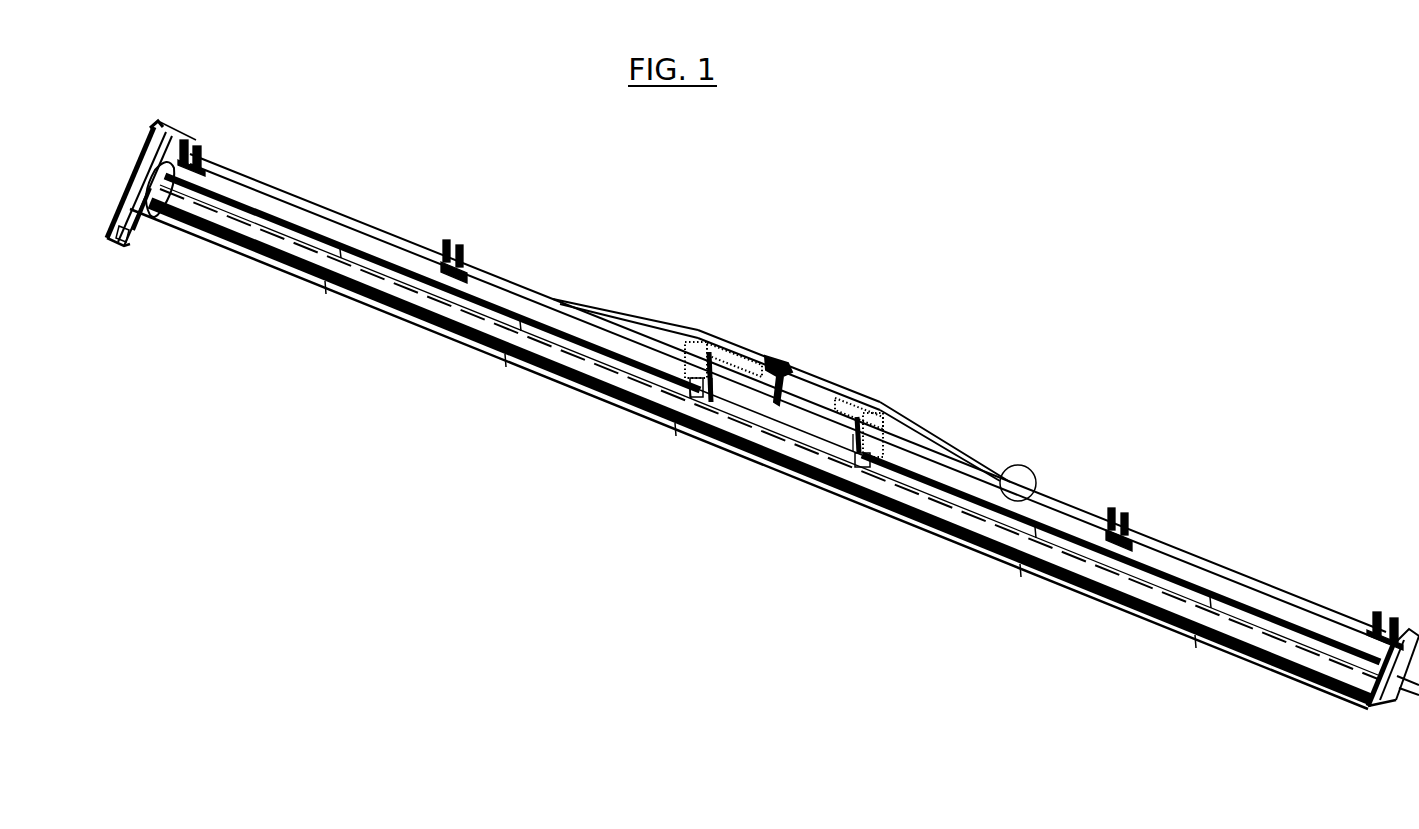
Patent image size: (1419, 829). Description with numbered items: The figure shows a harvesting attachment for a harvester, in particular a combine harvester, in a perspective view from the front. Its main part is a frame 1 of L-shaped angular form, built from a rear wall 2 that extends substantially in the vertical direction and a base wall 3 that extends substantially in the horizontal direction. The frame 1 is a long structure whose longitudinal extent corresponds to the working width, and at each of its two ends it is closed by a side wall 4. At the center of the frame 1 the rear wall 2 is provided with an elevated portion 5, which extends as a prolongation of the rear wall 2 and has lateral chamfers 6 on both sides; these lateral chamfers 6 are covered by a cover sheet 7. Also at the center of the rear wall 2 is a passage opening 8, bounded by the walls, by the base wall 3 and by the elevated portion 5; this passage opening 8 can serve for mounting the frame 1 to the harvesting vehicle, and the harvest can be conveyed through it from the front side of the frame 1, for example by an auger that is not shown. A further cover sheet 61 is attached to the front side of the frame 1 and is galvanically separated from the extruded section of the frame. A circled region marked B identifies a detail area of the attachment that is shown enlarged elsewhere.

The frame 1 is at (1061, 318).
The rear wall 2 is at (340, 233).
The base wall 3 is at (390, 290).
The side wall 4 is at (205, 157).
The elevated portion 5 is at (765, 365).
The lateral chamfer 6 is at (913, 437).
The cover sheet 7 is at (965, 455).
The passage opening 8 is at (800, 415).
The cover sheet 61 is at (490, 310).
The detail B is at (1033, 471).